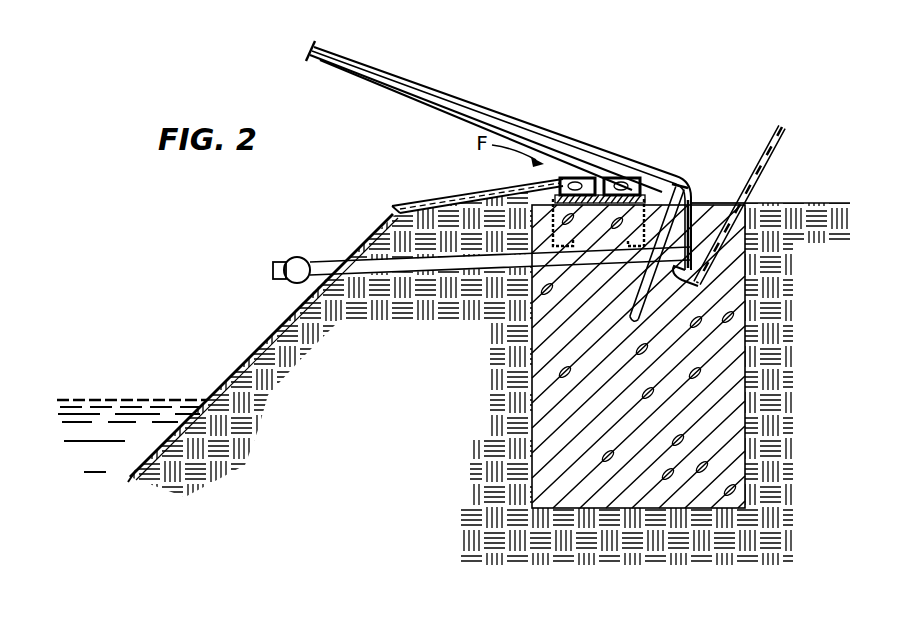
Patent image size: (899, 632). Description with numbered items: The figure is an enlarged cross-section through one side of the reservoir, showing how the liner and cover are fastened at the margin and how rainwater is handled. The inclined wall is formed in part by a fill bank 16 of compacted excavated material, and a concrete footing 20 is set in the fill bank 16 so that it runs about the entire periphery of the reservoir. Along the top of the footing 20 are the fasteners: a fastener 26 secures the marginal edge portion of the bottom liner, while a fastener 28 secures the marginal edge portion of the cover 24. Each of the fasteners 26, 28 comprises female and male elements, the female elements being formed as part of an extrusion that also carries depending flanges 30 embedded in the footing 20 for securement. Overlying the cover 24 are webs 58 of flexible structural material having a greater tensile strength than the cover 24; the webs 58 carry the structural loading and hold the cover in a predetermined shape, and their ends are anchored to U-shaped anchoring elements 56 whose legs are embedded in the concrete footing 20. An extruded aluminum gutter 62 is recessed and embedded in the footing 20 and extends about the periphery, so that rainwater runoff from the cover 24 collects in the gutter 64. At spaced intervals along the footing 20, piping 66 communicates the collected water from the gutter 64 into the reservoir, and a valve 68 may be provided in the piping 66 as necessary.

The fill bank 16 is at (303, 384).
The footing 20 is at (732, 370).
The cover 24 is at (372, 82).
The fastener 26 is at (565, 190).
The fastener 28 is at (672, 180).
The depending flange 30 is at (661, 180).
The anchoring element 56 is at (691, 216).
The web 58 is at (453, 97).
The gutter 62 is at (768, 162).
The gutter 64 is at (706, 202).
The piping 66 is at (360, 258).
The valve 68 is at (294, 257).